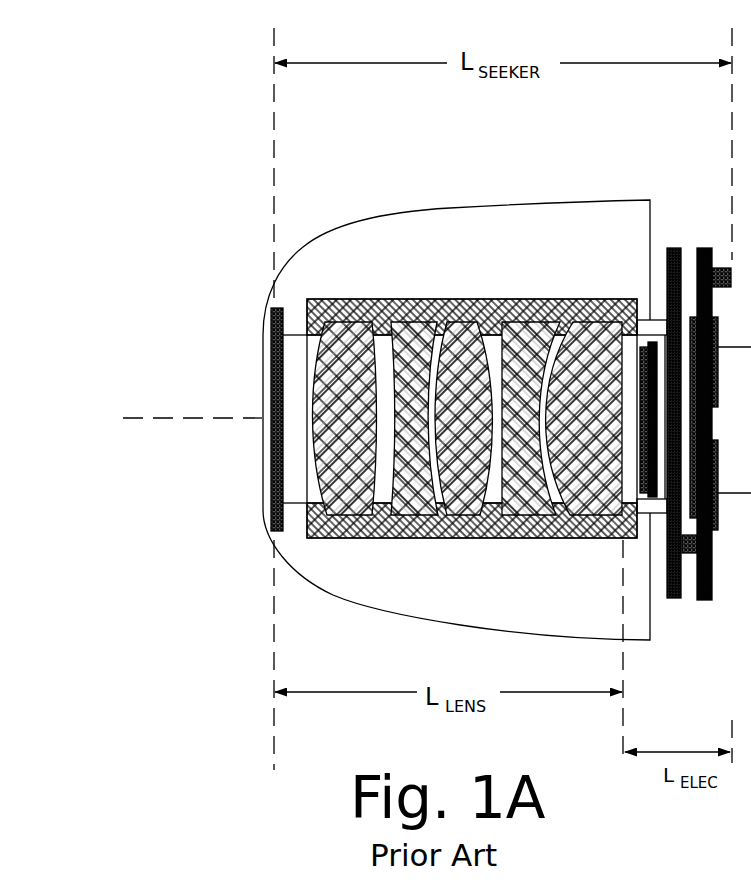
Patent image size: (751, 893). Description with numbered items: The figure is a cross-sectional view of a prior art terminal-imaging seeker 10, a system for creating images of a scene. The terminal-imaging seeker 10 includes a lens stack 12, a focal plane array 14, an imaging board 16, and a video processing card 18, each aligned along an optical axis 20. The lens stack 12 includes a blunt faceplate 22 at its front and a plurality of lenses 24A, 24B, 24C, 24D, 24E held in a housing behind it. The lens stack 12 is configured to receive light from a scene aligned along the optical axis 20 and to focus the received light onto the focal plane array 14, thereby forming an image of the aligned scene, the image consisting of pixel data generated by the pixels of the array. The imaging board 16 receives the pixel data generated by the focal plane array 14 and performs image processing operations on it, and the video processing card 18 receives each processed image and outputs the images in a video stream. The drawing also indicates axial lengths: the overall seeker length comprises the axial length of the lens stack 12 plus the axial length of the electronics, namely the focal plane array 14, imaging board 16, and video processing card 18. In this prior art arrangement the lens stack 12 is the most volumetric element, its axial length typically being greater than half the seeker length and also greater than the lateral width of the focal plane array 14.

The terminal-imaging seeker 10 is at (429, 182).
The lens stack 12 is at (470, 428).
The focal plane array 14 is at (637, 469).
The imaging board 16 is at (673, 248).
The video processing card 18 is at (705, 600).
The optical axis 20 is at (190, 420).
The blunt faceplate 22 is at (258, 377).
The lens 24A is at (365, 411).
The lens 24B is at (415, 492).
The lens 24C is at (486, 411).
The lens 24D is at (519, 346).
The lens 24E is at (605, 411).